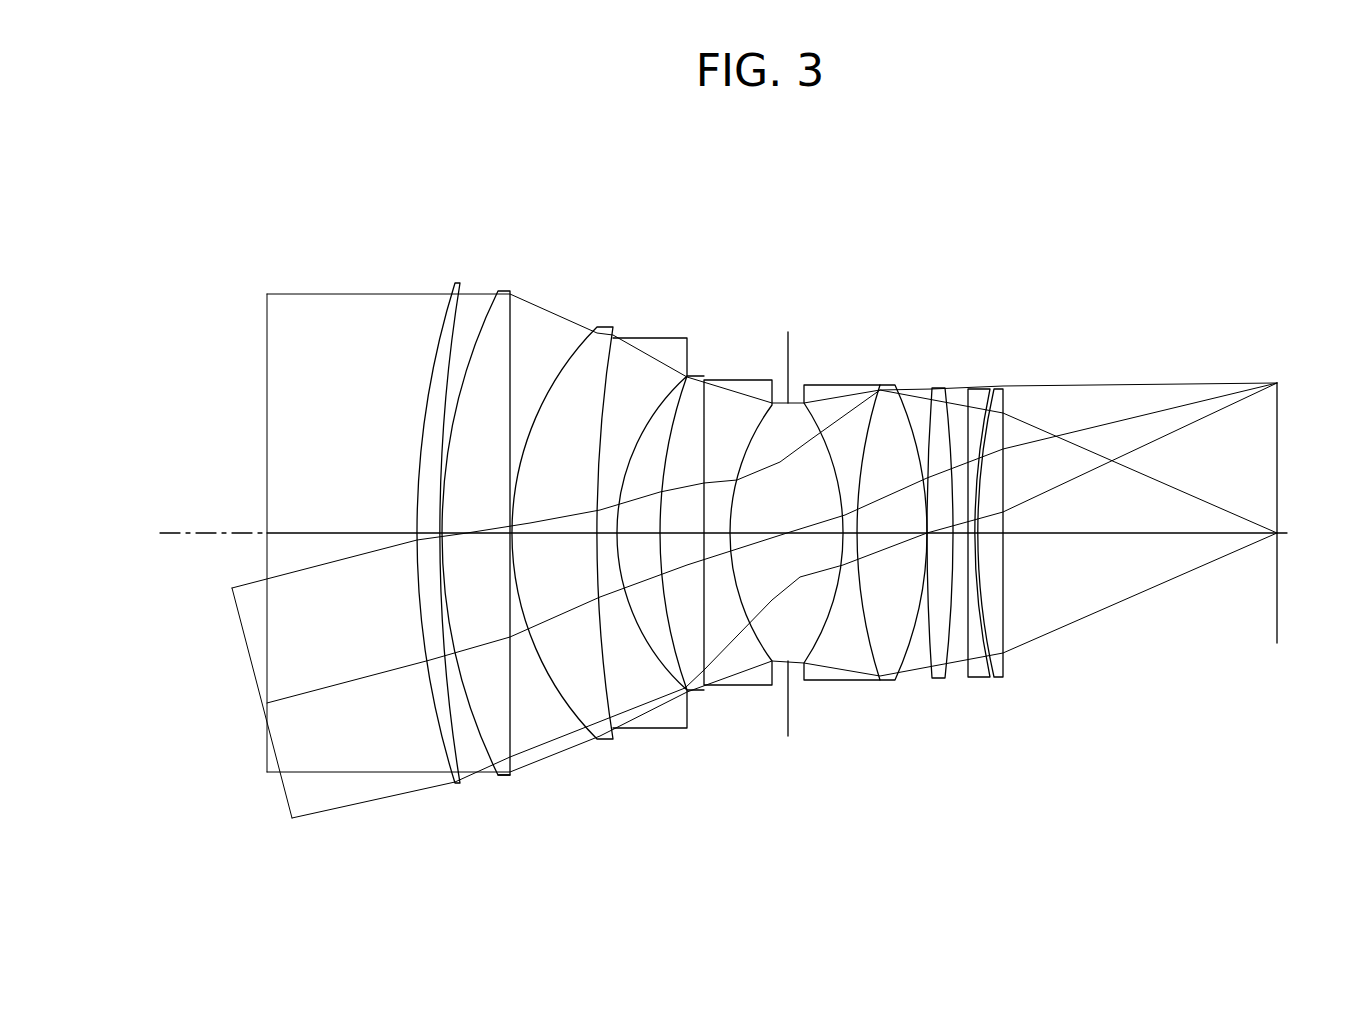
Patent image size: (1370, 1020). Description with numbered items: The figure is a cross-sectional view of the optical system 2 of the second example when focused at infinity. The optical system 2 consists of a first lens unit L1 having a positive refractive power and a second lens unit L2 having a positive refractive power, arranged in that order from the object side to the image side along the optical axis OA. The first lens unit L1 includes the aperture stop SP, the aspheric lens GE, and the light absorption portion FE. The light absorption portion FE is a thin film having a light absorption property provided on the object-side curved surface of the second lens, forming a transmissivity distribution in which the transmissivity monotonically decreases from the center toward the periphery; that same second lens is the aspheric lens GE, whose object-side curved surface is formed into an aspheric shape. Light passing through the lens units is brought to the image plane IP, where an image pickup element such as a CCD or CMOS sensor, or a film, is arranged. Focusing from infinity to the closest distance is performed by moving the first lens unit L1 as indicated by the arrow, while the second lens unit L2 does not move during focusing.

The optical system 2 is at (425, 233).
The first lens unit L1 is at (441, 830).
The second lens unit L2 is at (958, 830).
The aperture stop SP is at (778, 360).
The image plane IP is at (1280, 458).
The optical axis OA is at (232, 527).
The light absorption portion FE is at (505, 312).
The aspheric lens GE is at (488, 745).